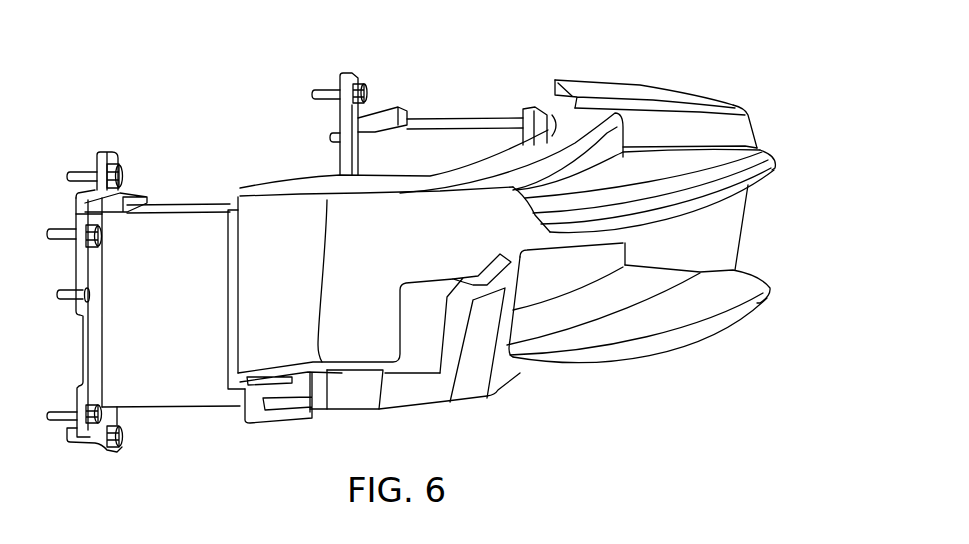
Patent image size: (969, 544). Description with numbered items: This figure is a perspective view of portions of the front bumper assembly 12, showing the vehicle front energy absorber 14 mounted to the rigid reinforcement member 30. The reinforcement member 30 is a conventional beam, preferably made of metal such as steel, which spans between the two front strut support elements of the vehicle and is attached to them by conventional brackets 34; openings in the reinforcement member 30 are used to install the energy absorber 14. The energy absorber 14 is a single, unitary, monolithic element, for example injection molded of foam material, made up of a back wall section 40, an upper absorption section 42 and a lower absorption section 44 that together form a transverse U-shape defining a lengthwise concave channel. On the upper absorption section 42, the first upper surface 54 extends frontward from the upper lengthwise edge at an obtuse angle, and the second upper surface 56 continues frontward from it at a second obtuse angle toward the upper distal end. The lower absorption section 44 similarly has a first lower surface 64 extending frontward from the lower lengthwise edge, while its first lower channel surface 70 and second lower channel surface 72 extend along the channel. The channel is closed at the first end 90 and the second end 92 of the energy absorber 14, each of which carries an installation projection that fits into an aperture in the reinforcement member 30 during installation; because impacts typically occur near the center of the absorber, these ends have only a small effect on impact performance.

The front bumper assembly 12 is at (697, 47).
The energy absorber 14 is at (745, 157).
The reinforcement member 30 is at (530, 160).
The brackets 34 is at (177, 233).
The back wall section 40 is at (555, 277).
The upper absorption section 42 is at (758, 190).
The lower absorption section 44 is at (682, 308).
The first upper surface 54 is at (658, 160).
The second upper surface 56 is at (722, 160).
The first lower surface 64 is at (780, 170).
The first lower channel surface 70 is at (617, 298).
The second lower channel surface 72 is at (727, 293).
The first end 90 is at (352, 342).
The second end 92 is at (611, 95).